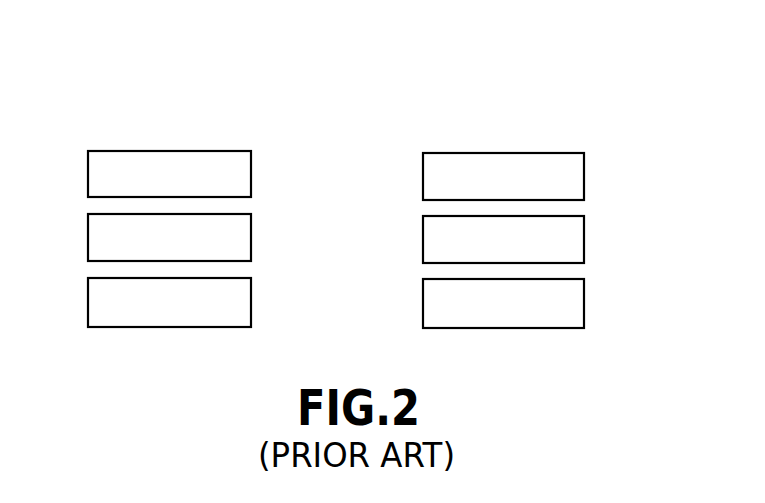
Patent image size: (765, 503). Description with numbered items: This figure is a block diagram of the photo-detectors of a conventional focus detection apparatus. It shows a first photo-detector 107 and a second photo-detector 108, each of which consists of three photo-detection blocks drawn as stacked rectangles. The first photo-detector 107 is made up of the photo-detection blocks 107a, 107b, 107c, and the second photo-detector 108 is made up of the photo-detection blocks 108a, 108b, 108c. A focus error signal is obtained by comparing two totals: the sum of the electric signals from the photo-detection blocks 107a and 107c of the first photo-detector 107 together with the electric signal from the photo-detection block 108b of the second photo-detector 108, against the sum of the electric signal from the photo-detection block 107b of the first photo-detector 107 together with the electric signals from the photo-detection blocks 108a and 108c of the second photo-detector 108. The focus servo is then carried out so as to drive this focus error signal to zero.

The first photo-detector 107 is at (170, 131).
The photo-detection block 107a is at (302, 160).
The photo-detection block 107b is at (302, 225).
The photo-detection block 107c is at (302, 289).
The second photo-detector 108 is at (505, 133).
The photo-detection block 108a is at (584, 175).
The photo-detection block 108b is at (584, 240).
The photo-detection block 108c is at (584, 304).